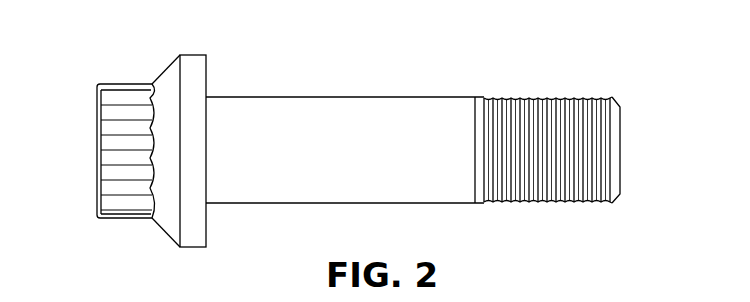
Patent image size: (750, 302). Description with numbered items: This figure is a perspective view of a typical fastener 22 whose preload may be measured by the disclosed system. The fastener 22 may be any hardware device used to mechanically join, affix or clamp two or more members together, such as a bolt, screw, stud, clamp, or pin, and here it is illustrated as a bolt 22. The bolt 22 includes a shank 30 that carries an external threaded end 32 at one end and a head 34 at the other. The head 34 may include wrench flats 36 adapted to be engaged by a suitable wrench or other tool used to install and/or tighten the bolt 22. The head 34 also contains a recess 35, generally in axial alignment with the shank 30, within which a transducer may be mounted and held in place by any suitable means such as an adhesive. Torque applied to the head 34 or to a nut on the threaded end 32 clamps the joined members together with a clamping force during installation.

The fastener 22 is at (317, 145).
The shank 30 is at (428, 120).
The external threaded end 32 is at (534, 134).
The head 34 is at (146, 248).
The recess 35 is at (96, 115).
The wrench flats 36 is at (124, 86).